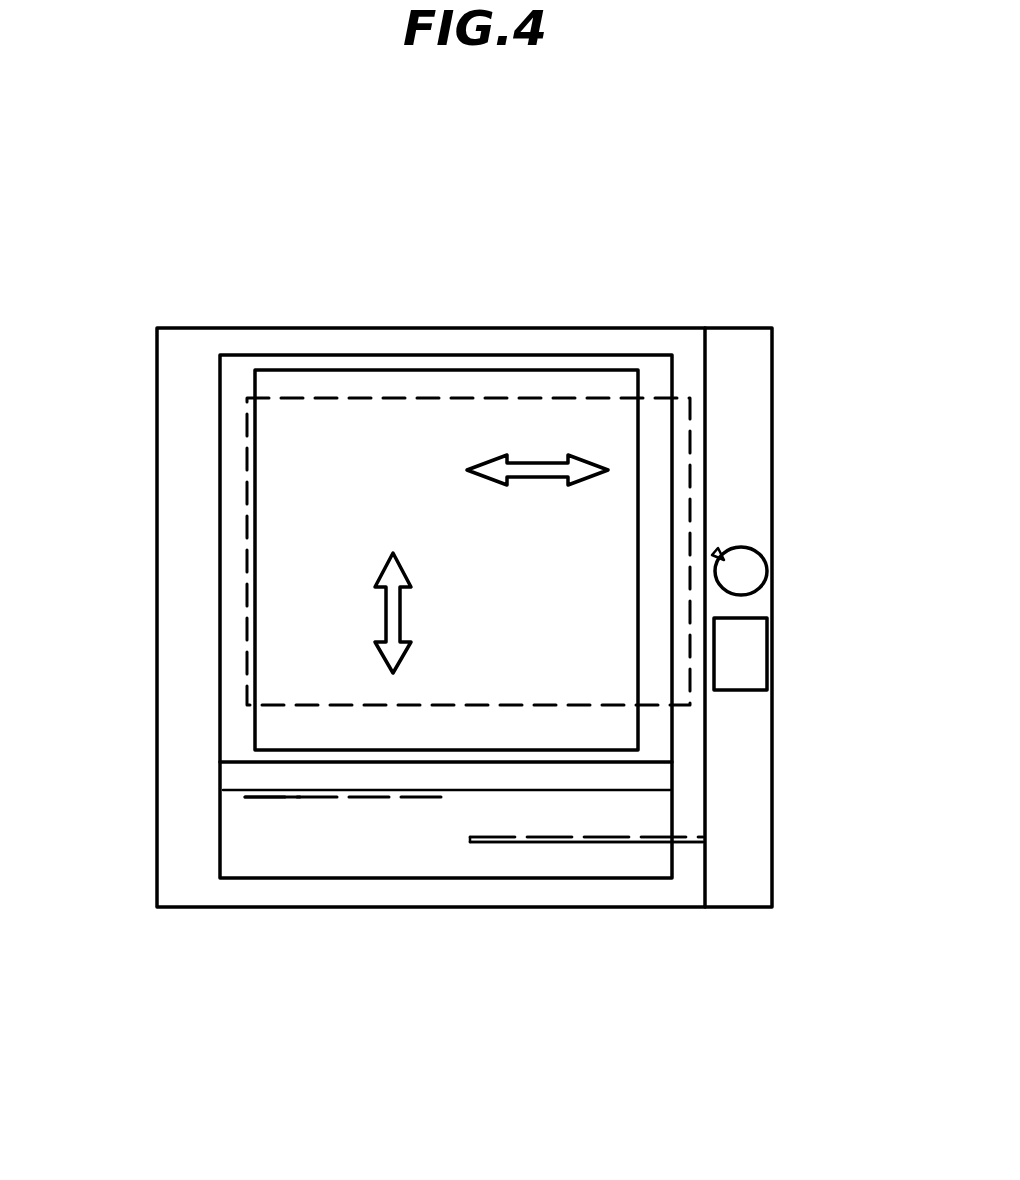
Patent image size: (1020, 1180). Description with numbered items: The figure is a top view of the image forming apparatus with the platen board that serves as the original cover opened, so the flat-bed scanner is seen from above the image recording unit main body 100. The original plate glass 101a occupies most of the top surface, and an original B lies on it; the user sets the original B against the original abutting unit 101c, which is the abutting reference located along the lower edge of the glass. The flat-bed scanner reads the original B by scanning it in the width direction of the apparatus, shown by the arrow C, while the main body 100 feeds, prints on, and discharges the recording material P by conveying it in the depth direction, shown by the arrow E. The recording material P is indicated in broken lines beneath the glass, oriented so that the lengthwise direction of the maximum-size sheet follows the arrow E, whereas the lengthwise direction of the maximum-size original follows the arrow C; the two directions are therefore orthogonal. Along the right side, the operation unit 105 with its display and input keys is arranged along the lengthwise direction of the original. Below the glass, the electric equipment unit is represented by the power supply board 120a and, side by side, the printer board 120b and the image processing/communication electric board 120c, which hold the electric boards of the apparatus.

The image recording unit main body 100 is at (592, 302).
The original plate glass 101a is at (235, 370).
The original abutting unit 101c is at (242, 777).
The operation unit 105 is at (740, 505).
The recording material P is at (660, 393).
The original B is at (255, 736).
The arrow indicating depth direction E is at (537, 499).
The arrow indicating width direction C is at (369, 613).
The power supply board 120a is at (413, 797).
The printer board 120b is at (600, 838).
The image processing/communication electric board 120c is at (605, 948).